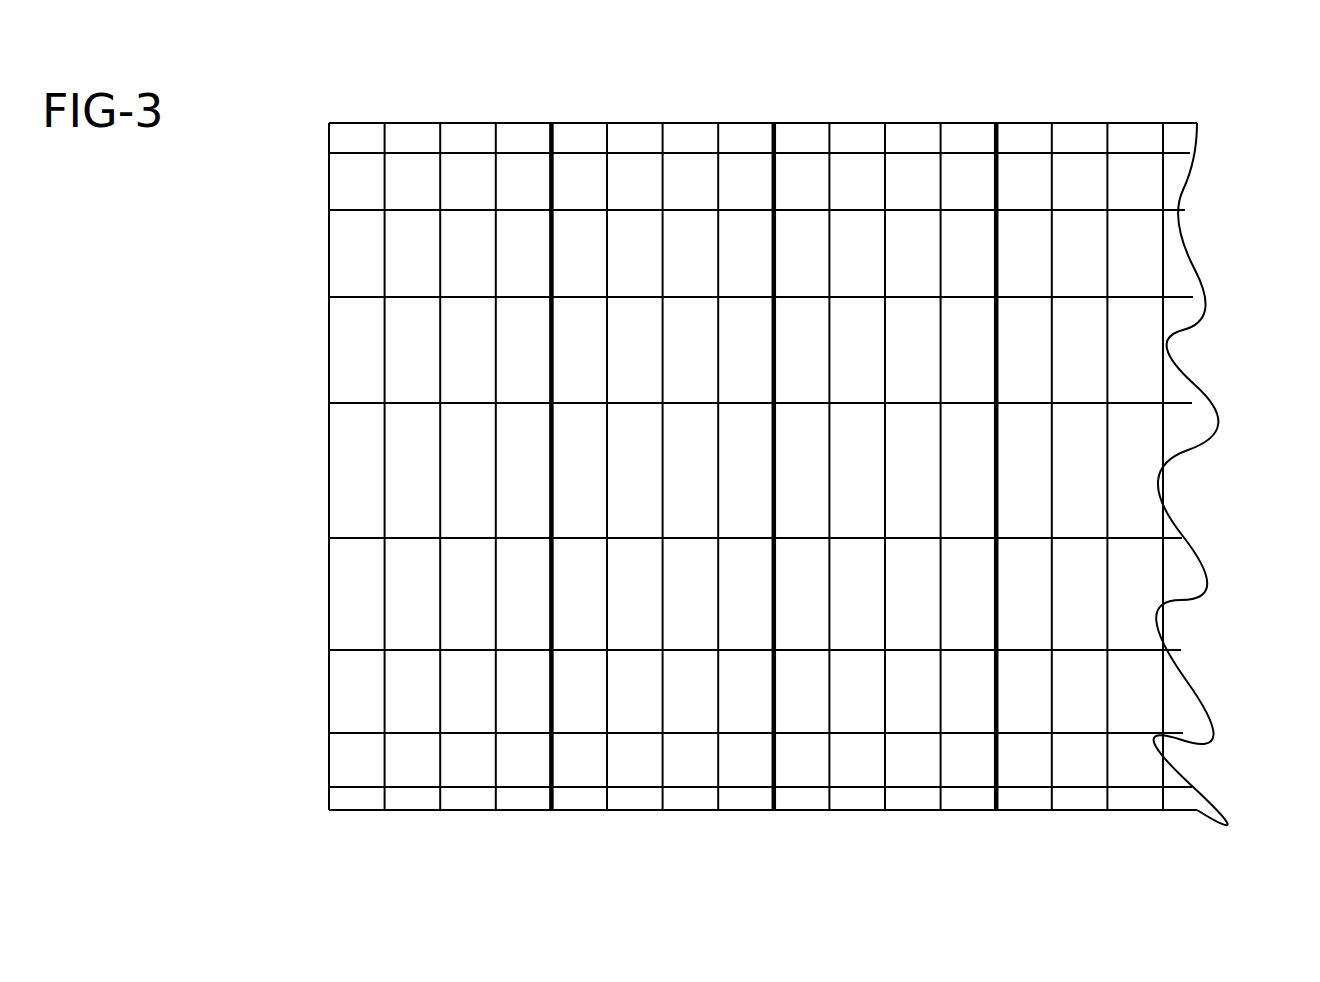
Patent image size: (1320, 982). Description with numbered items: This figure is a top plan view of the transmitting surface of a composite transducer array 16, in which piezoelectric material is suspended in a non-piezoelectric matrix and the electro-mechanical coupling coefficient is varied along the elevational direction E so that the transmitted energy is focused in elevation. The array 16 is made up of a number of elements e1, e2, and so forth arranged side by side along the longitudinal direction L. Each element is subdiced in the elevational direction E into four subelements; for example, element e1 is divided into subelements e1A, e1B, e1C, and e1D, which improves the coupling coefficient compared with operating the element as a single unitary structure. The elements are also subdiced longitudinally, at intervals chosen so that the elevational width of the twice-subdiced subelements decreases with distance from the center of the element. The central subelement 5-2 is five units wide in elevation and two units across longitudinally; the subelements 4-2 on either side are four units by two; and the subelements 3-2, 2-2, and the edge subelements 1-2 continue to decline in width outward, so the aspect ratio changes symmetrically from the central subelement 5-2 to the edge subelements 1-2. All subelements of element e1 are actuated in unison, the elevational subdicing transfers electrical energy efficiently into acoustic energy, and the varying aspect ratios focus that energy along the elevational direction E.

The transducer array 16 is at (893, 123).
The subelement e1A is at (355, 112).
The subelement e1B is at (418, 112).
The subelement e1C is at (470, 112).
The subelement e1D is at (523, 112).
The element e1 is at (542, 823).
The element e2 is at (770, 824).
The edge subelement 1-2 is at (313, 127).
The subelement 2-2 is at (314, 155).
The subelement 3-2 is at (314, 214).
The subelement 4-2 is at (314, 301).
The central subelement 5-2 is at (314, 408).
The elevational direction E is at (1297, 540).
The longitudinal direction L is at (828, 880).